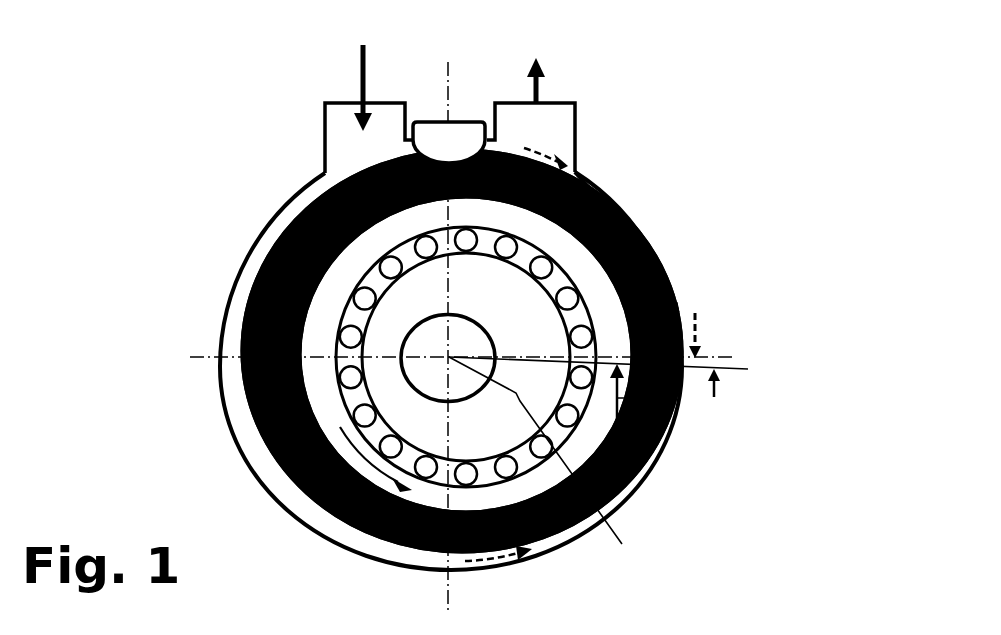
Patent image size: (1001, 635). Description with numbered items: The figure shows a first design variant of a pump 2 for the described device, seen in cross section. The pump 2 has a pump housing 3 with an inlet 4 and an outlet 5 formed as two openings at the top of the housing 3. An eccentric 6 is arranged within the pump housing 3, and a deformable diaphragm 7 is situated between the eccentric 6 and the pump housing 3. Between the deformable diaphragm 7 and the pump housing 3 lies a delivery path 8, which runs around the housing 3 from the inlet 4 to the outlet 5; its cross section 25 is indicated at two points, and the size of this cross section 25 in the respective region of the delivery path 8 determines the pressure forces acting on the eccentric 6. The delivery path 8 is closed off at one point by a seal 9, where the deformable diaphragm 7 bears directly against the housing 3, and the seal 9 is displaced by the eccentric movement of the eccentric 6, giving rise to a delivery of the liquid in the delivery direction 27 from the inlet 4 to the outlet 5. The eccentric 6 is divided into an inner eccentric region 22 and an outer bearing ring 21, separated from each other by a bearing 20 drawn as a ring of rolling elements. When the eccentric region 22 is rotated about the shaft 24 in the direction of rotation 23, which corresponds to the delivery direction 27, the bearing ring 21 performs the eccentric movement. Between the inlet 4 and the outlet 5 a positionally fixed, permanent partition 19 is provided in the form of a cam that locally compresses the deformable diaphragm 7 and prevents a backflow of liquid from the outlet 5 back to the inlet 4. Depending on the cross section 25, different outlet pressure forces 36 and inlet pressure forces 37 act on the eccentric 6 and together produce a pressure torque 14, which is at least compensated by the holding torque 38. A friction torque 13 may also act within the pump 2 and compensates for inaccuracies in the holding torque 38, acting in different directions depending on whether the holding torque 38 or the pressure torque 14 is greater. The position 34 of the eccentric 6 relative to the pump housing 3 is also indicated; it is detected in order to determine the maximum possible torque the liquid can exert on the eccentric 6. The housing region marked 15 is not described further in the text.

The pump 2 is at (238, 158).
The pump housing 3 is at (222, 322).
The inlet 4 is at (325, 103).
The outlet 5 is at (496, 103).
The eccentric 6 is at (545, 548).
The deformable diaphragm 7 is at (678, 296).
The delivery path 8 is at (415, 555).
The seal 9 is at (580, 170).
The friction torque 13 is at (716, 397).
The pressure torque 14 is at (695, 313).
The housing 15 is at (262, 470).
The partition 19 is at (440, 120).
The bearing 20 is at (640, 234).
The outer bearing ring 21 is at (665, 260).
The inner eccentric region 22 is at (613, 207).
The direction of rotation 23 is at (318, 510).
The shaft 24 is at (553, 464).
The cross section 25 is at (263, 232).
The delivery direction 27 is at (432, 70).
The position 34 is at (748, 369).
The outlet pressure force 36 is at (524, 140).
The inlet pressure force 37 is at (497, 558).
The holding torque 38 is at (677, 395).